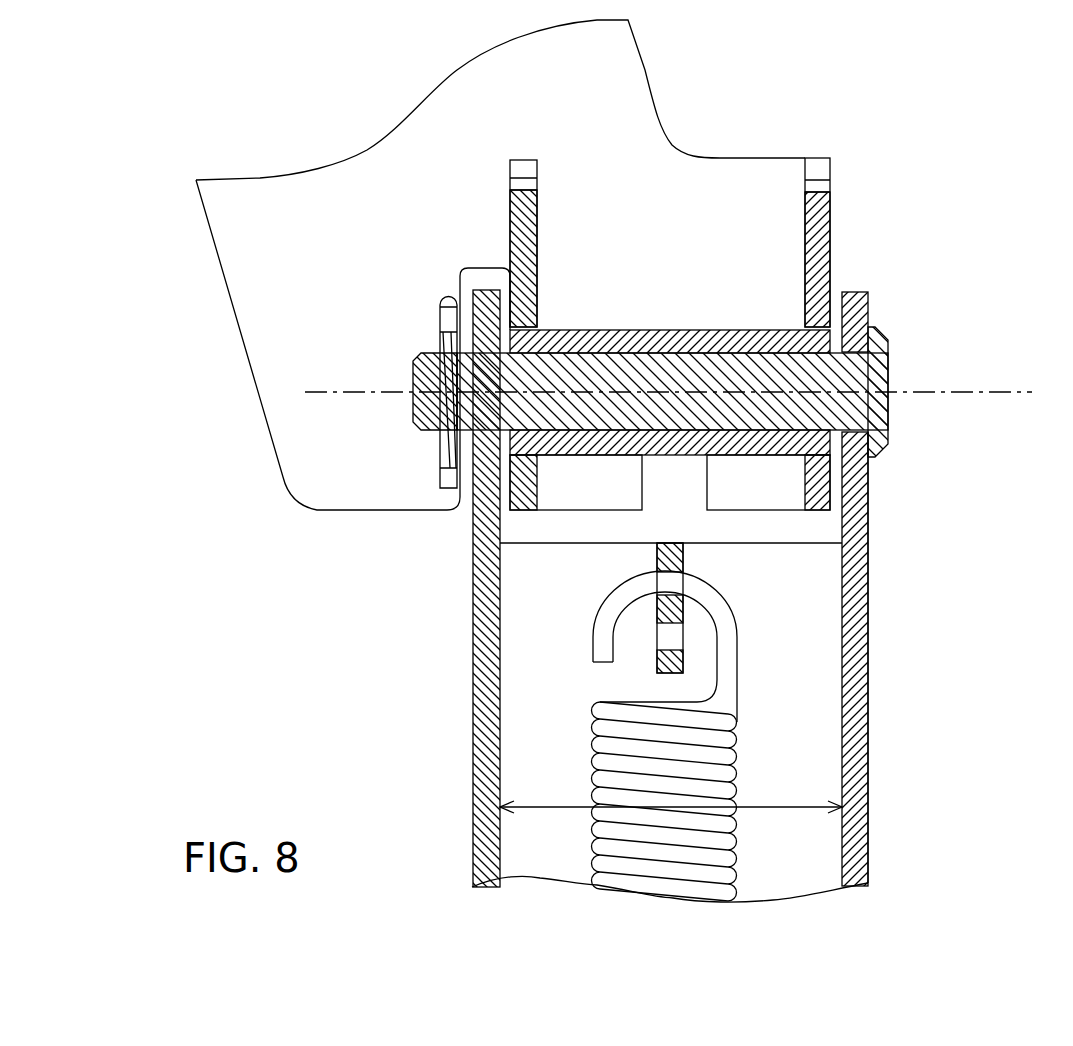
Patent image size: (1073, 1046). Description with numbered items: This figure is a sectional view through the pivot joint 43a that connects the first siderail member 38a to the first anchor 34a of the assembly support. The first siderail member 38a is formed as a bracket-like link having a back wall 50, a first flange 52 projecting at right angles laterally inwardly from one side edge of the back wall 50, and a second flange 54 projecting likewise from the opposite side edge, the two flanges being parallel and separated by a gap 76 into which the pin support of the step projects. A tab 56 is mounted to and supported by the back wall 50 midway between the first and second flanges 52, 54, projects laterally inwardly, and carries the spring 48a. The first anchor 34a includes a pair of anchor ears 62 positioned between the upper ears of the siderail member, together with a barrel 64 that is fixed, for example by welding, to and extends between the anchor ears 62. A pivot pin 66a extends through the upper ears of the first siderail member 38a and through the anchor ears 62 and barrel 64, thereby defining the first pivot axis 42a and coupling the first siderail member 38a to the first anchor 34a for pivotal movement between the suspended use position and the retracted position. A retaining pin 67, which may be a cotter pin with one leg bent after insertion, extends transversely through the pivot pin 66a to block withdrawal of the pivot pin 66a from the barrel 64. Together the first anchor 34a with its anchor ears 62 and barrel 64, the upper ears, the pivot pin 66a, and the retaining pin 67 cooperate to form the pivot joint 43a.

The first anchor 34a is at (657, 167).
The anchor ears 62 is at (537, 222).
The first flange 52 is at (480, 283).
The barrel 64 is at (593, 328).
The pivot pin 66a is at (630, 365).
The pivot joint 43a is at (882, 305).
The first pivot axis 42a is at (997, 388).
The retaining pin 67 is at (440, 340).
The first siderail member 38a is at (877, 617).
The second flange 54 is at (472, 700).
The back wall 50 is at (822, 752).
The tab 56 is at (655, 660).
The spring 48a is at (728, 782).
The gap 76 is at (780, 808).